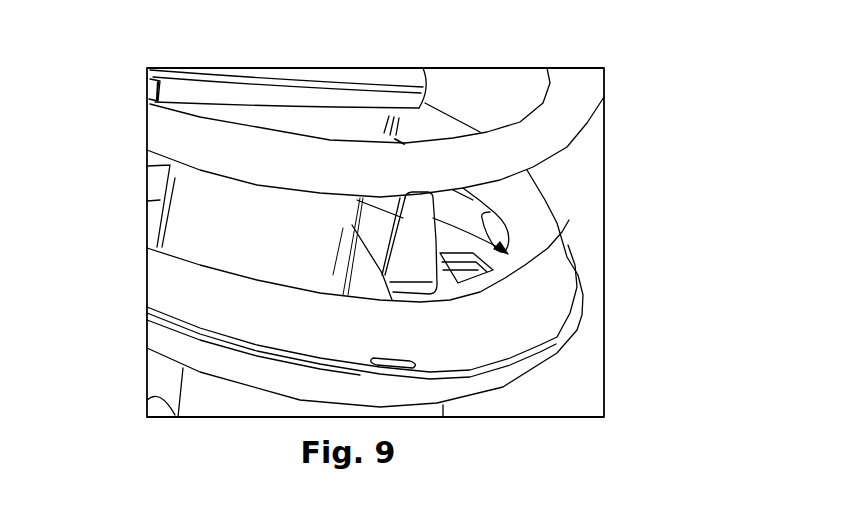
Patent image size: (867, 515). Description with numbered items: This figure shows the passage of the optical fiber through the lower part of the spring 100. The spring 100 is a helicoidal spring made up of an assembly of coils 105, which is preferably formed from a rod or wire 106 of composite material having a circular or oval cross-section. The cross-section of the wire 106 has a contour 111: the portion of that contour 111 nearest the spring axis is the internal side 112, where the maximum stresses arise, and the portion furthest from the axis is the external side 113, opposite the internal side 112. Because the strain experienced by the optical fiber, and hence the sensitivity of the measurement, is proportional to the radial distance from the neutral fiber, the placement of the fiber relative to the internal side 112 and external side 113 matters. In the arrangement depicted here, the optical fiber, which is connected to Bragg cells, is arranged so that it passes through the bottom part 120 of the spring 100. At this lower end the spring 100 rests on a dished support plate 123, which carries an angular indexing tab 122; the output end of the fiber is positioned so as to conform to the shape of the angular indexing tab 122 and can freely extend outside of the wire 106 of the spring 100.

The spring 100 is at (628, 191).
The bottom part of the spring 120 is at (452, 242).
The assembly of coils 105 is at (175, 140).
The wire 106 is at (589, 139).
The contour 111 is at (247, 152).
The internal side 112 is at (550, 227).
The external side 113 is at (545, 272).
The angular indexing tab 122 is at (417, 257).
The dished support plate 123 is at (549, 315).